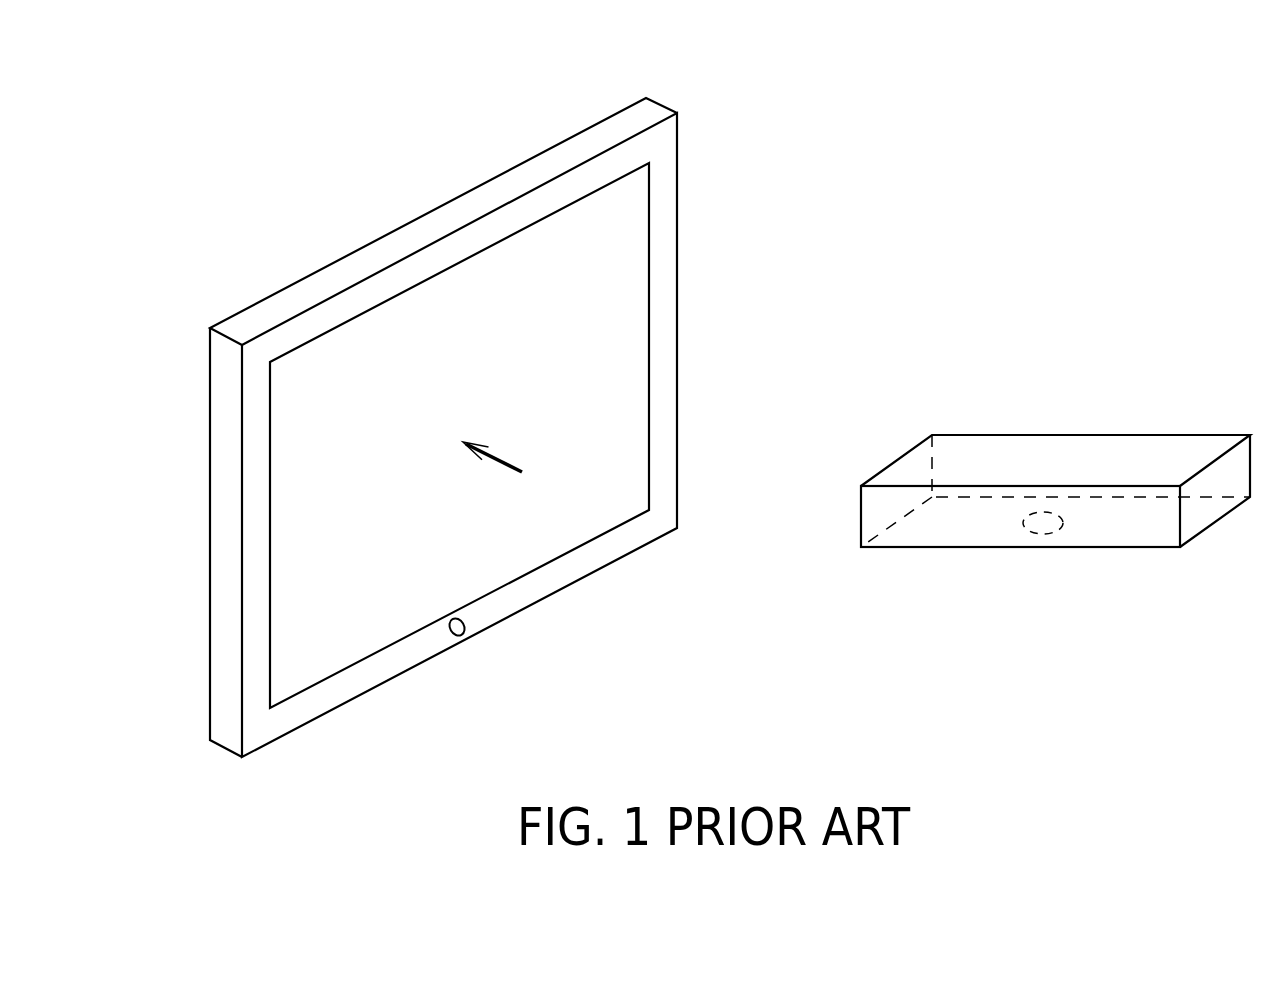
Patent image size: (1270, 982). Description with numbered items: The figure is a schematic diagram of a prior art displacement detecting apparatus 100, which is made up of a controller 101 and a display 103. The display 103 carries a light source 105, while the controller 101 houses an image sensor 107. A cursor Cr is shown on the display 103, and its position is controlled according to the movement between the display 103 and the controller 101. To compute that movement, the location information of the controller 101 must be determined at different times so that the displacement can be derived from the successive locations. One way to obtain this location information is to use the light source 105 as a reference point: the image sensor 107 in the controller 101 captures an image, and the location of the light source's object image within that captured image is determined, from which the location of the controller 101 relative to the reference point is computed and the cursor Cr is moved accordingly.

The displacement detecting apparatus 100 is at (1110, 118).
The controller 101 is at (1124, 395).
The display 103 is at (343, 227).
The light source 105 is at (457, 635).
The image sensor 107 is at (1043, 523).
The cursor Cr is at (513, 462).